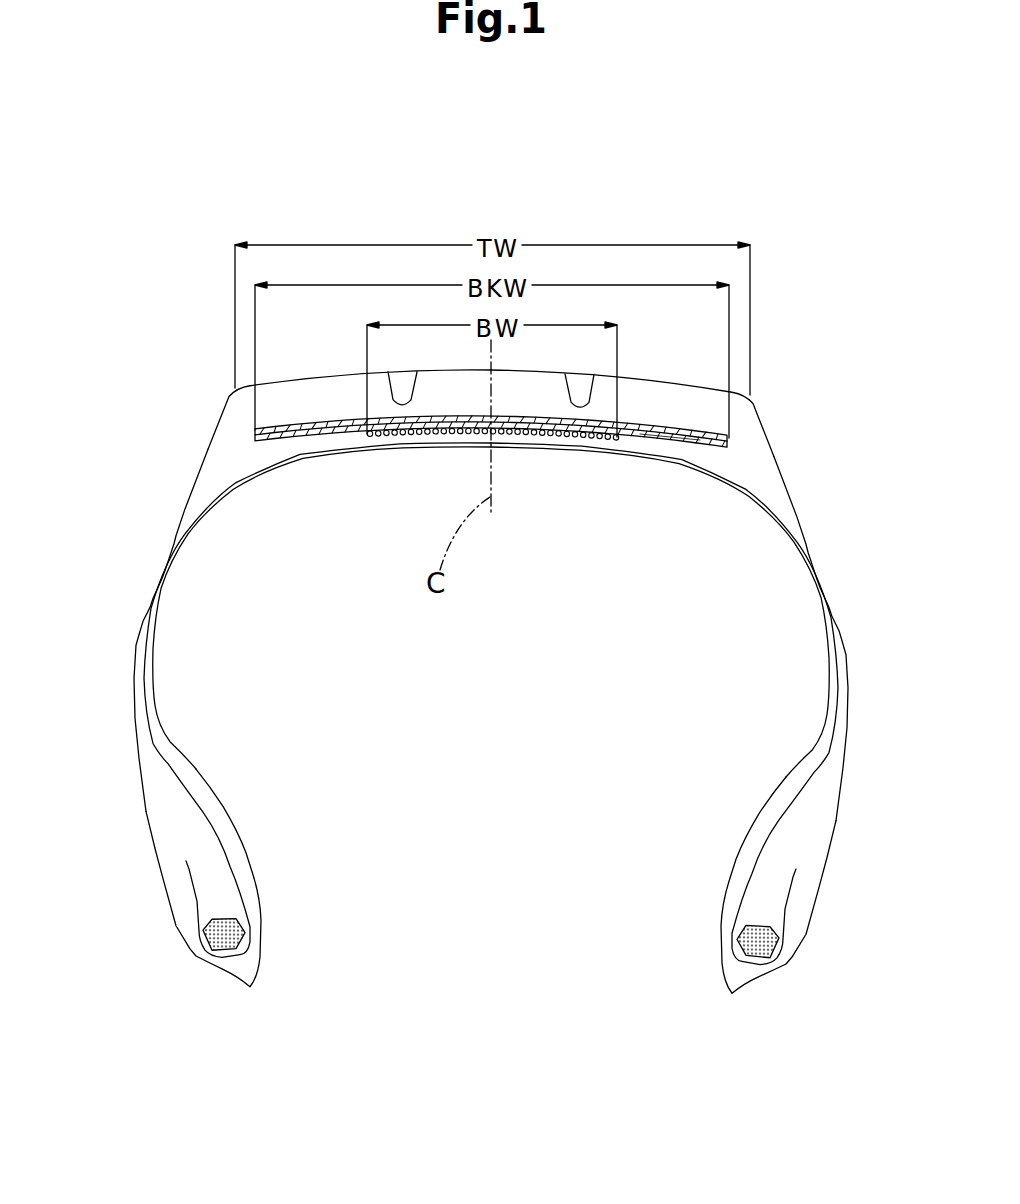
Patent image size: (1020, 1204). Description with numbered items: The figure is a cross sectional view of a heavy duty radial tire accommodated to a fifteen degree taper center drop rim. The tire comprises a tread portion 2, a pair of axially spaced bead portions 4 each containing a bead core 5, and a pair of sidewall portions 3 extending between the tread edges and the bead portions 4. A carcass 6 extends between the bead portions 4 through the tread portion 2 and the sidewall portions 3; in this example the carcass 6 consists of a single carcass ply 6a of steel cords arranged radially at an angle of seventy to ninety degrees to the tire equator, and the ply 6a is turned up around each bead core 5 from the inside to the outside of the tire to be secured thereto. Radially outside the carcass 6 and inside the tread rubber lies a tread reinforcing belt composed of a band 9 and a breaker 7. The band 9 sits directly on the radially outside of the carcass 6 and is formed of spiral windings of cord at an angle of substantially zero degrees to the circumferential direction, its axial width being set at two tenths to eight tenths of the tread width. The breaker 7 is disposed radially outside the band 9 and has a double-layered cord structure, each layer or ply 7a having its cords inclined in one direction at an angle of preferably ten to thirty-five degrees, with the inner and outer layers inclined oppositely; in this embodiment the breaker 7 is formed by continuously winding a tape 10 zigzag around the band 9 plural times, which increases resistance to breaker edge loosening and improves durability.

The tread portion 2 is at (660, 365).
The sidewall portion 3 is at (115, 679).
The bead portion 4 is at (148, 917).
The bead core 5 is at (242, 925).
The carcass 6 is at (491, 701).
The carcass ply 6a is at (167, 758).
The breaker 7 is at (497, 502).
The breaker layer or ply 7a is at (707, 446).
The band 9 is at (590, 440).
The tape 10 is at (670, 436).